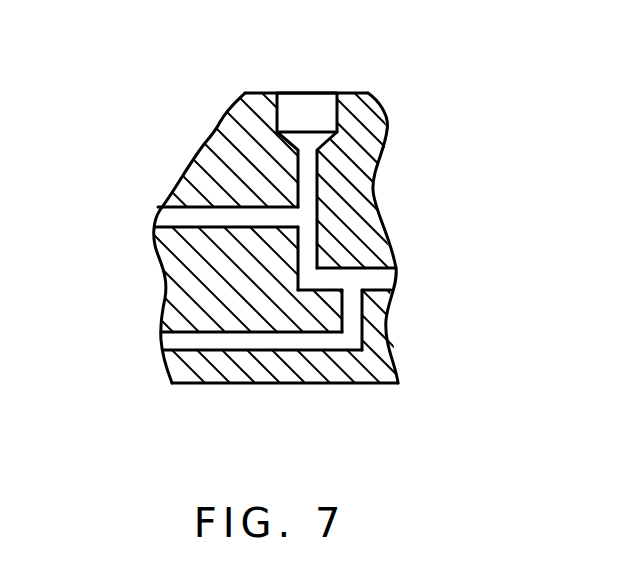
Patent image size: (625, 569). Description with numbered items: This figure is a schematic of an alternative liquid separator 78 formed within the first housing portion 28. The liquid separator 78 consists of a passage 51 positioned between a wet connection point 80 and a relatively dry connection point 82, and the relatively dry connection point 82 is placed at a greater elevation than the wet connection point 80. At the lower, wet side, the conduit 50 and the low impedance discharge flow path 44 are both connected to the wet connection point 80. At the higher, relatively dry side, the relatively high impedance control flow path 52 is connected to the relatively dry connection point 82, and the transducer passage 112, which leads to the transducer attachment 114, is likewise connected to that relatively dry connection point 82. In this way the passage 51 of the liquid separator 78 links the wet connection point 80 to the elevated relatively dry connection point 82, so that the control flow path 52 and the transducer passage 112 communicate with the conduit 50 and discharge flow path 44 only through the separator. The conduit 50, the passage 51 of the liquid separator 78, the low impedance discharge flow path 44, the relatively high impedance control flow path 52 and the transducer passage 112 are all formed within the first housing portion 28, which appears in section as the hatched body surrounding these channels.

The first housing portion 28 is at (228, 148).
The transducer attachment 114 is at (314, 107).
The transducer passage 112 is at (312, 178).
The liquid separator 78 is at (380, 223).
The relatively high impedance control flow path 52 is at (170, 222).
The relatively dry connection point 82 is at (303, 215).
The conduit 50 is at (392, 281).
The passage 51 is at (305, 245).
The low impedance discharge flow path 44 is at (190, 343).
The wet connection point 80 is at (393, 383).